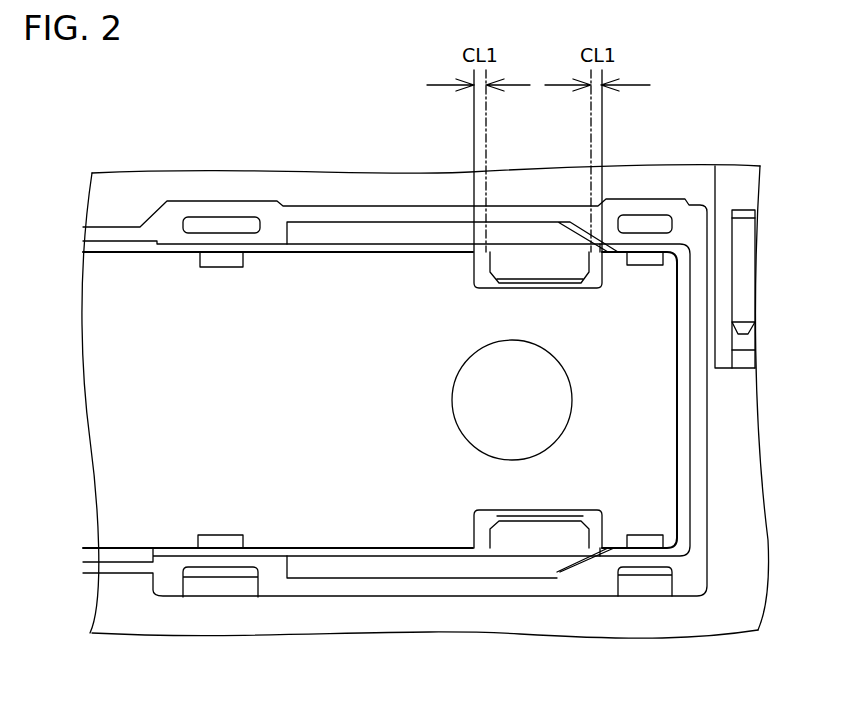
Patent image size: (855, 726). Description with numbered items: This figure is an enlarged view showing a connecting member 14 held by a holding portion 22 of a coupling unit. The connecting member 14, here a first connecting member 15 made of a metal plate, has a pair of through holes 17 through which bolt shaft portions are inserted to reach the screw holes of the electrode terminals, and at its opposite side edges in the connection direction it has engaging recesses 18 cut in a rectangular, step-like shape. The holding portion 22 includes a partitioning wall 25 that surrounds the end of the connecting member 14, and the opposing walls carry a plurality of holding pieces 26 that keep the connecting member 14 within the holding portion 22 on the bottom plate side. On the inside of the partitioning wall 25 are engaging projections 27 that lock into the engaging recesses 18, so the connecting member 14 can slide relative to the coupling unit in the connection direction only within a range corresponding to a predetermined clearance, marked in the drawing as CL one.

The connecting member 14 is at (425, 426).
The first connecting member 15 is at (317, 513).
The through hole 17 is at (523, 347).
The engaging recess 18 is at (524, 290).
The holding portion 22 is at (327, 183).
The partitioning wall 25 is at (412, 565).
The holding piece 26 is at (221, 262).
The engaging projection 27 is at (562, 265).